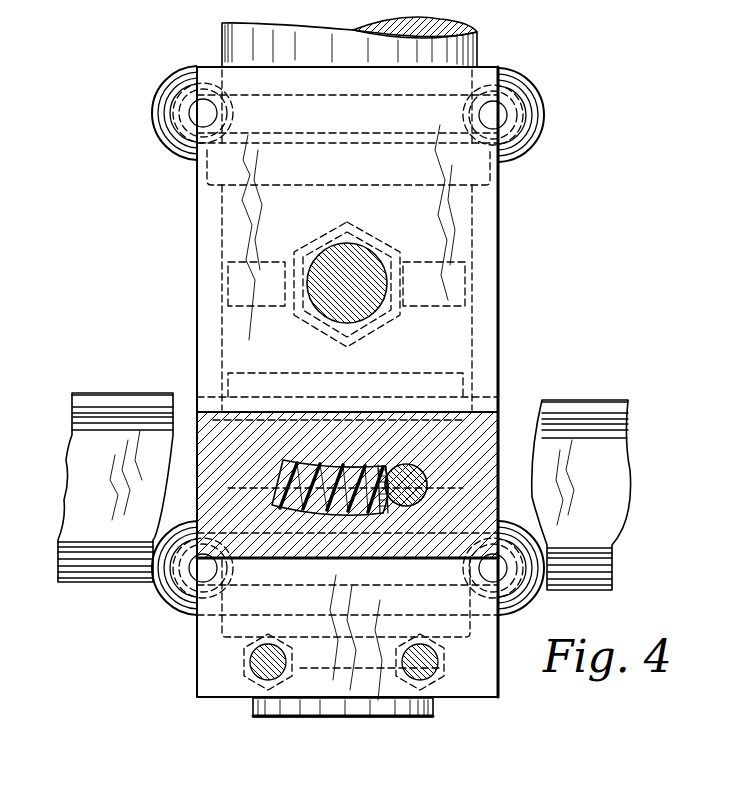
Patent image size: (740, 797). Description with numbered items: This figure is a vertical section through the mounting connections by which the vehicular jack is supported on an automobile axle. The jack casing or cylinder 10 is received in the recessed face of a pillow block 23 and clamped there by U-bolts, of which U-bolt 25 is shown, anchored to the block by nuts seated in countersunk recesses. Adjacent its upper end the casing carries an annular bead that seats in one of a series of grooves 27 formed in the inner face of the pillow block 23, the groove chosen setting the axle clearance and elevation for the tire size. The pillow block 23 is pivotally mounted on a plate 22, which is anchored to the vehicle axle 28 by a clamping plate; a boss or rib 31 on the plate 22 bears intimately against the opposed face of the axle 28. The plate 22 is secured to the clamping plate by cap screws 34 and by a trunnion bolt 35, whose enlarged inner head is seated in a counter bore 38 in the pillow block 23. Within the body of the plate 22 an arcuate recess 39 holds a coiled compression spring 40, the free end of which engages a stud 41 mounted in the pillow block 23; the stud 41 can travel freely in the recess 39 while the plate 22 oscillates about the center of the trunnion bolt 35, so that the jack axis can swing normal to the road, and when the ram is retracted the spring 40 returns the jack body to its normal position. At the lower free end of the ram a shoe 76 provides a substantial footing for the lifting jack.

The jack casing or cylinder 10 is at (478, 40).
The plate 22 is at (212, 425).
The pillow block 23 is at (527, 82).
The U-bolt 25 is at (172, 590).
The groove 27 is at (226, 266).
The vehicle axle 28 is at (612, 517).
The boss or rib 31 is at (503, 410).
The cap screws 34 is at (195, 114).
The trunnion bolt 35 is at (366, 300).
The counter bore 38 is at (323, 230).
The recess 39 is at (343, 462).
The coiled compression spring 40 is at (300, 462).
The stud 41 is at (427, 470).
The shoe 76 is at (288, 706).